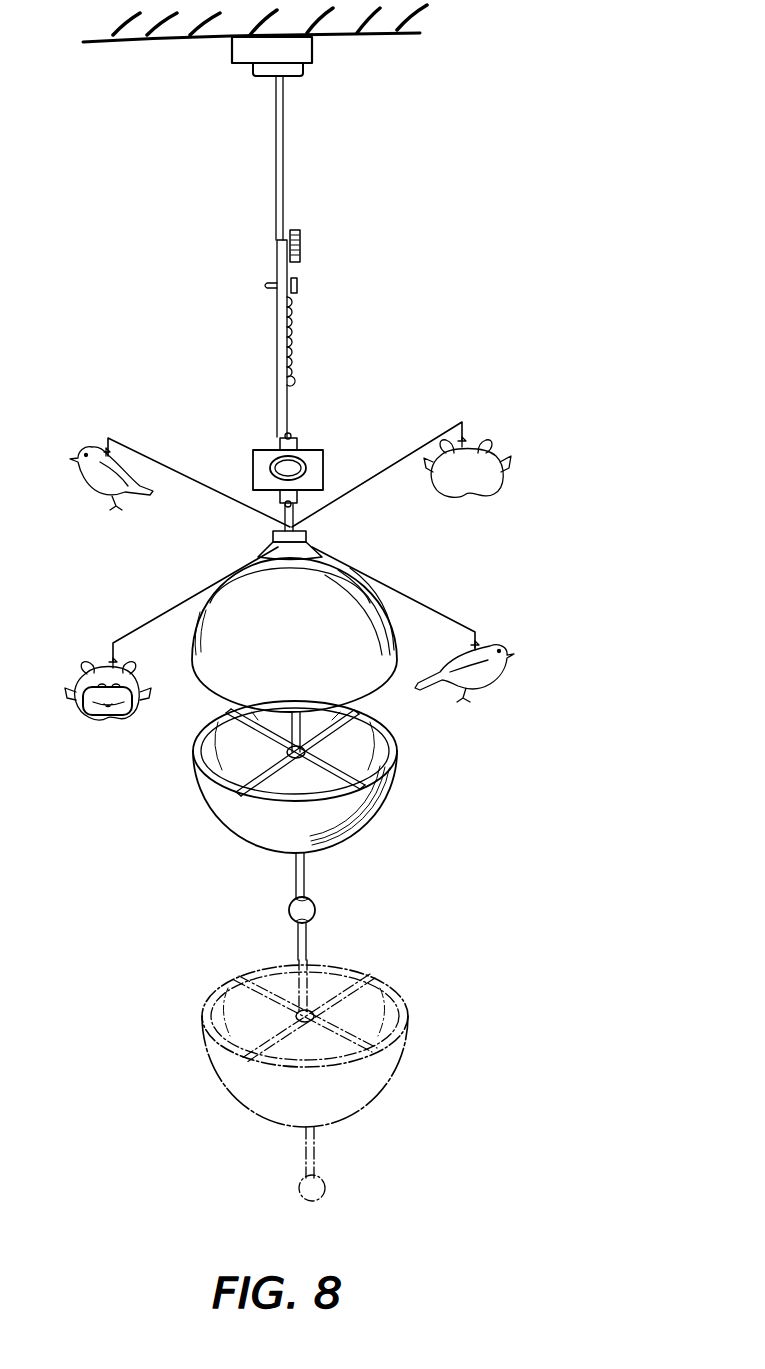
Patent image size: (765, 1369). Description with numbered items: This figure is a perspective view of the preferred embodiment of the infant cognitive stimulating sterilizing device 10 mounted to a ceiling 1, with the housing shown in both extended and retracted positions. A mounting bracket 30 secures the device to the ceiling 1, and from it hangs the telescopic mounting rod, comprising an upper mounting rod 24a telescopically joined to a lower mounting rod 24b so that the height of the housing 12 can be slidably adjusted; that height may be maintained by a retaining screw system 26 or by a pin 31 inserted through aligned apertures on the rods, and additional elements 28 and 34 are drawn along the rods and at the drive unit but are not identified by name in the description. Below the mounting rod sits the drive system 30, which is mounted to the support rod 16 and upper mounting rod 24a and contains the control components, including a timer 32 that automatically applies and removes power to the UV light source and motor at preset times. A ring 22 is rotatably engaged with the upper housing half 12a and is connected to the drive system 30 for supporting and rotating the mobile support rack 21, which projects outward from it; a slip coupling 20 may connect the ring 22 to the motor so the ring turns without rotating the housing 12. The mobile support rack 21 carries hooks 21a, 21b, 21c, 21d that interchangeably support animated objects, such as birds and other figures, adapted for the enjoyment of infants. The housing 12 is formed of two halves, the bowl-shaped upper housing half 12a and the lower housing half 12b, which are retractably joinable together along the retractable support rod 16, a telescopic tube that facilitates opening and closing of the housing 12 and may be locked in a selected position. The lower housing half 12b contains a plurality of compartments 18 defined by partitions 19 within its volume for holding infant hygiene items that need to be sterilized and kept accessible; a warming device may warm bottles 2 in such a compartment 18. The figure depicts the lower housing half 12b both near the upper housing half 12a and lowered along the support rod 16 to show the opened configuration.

The ceiling 1 is at (405, 38).
The bottles 2 is at (237, 48).
The infant cognitive stimulating sterilizing device 10 is at (122, 399).
The housing 12 is at (192, 676).
The upper housing half 12a is at (385, 654).
The lower housing half 12b is at (388, 785).
The support rod 16 is at (293, 518).
The compartment 18 is at (362, 752).
The partitions 19 is at (348, 712).
The slip coupling 20 is at (306, 536).
The mobile support rack 21 is at (156, 426).
The hook 21a is at (478, 636).
The hook 21b is at (463, 433).
The hook 21c is at (108, 450).
The hook 21d is at (116, 658).
The ring 22 is at (313, 546).
The upper mounting rod 24a is at (278, 138).
The lower mounting rod 24b is at (280, 270).
The retaining screw system 26 is at (300, 247).
The ball / chain 28 is at (290, 300).
The drive system 30 is at (300, 79).
The pin 31 is at (297, 286).
The timer 32 is at (306, 458).
The connector 34 is at (300, 446).